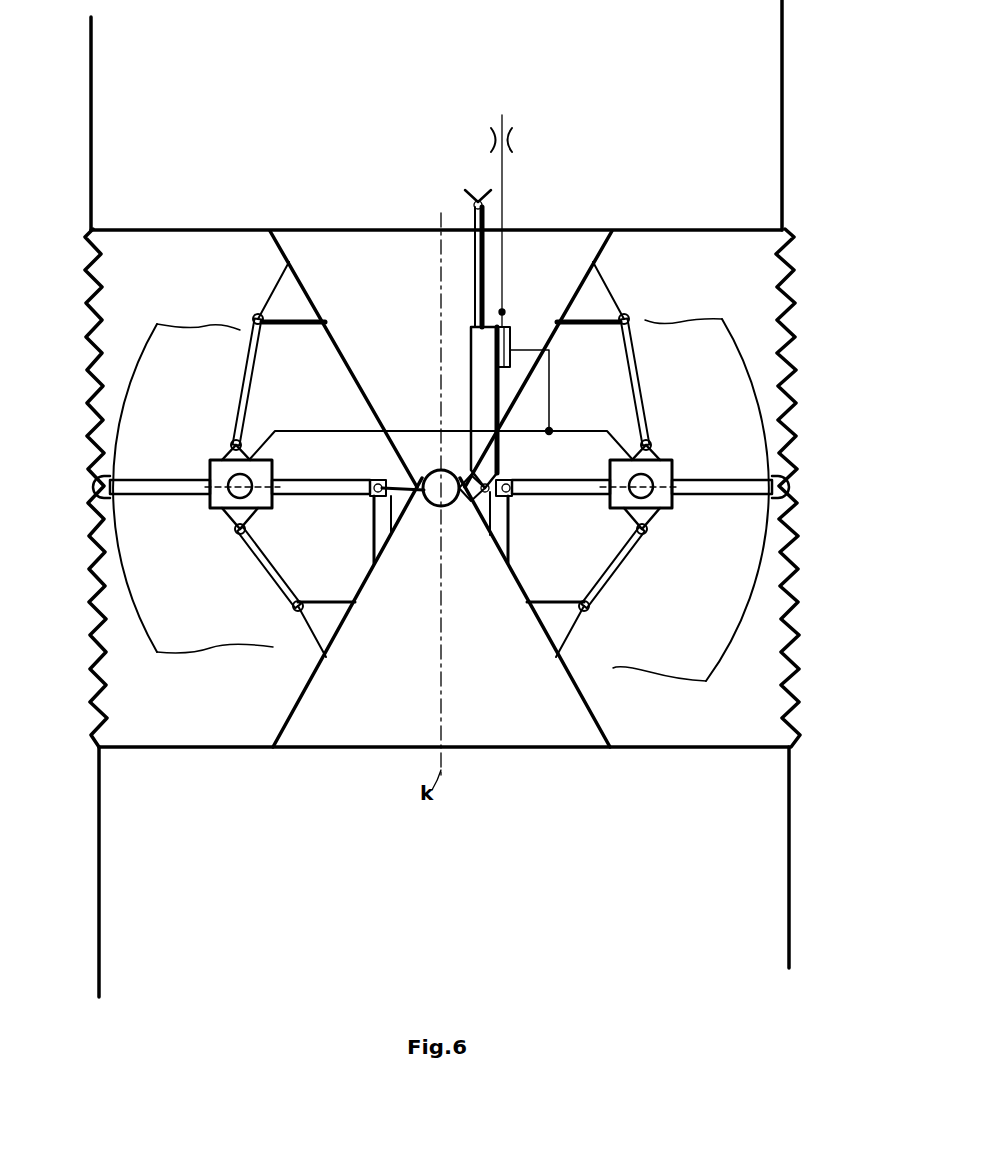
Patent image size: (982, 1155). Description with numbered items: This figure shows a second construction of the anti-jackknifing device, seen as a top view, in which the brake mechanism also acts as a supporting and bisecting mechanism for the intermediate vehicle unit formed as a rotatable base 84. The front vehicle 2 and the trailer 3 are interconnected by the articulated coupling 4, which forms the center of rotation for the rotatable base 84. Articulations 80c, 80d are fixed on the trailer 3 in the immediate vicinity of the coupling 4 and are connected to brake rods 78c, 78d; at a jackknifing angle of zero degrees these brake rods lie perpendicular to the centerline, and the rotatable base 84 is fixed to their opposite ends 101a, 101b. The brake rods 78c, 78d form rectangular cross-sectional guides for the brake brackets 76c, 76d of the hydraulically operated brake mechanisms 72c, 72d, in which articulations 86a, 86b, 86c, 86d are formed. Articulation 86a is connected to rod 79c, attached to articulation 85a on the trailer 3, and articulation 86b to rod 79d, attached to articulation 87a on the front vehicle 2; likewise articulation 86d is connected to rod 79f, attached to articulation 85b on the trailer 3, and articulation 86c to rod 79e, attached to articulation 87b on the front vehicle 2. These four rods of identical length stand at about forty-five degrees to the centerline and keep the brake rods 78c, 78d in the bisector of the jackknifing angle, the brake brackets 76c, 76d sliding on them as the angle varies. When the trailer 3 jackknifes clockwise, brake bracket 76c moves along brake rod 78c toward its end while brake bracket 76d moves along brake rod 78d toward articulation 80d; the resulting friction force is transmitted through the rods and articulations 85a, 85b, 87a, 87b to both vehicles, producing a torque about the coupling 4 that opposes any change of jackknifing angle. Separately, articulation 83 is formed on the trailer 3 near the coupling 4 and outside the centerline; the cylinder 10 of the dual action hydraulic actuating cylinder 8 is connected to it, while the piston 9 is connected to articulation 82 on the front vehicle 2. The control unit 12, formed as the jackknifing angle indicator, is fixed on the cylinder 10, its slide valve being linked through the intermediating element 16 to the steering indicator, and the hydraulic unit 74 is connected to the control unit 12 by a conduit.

The front vehicle 2 is at (765, 37).
The trailer 3 is at (768, 891).
The articulated coupling 4 is at (432, 468).
The dual action hydraulic actuating cylinder 8 is at (470, 363).
The piston 9 is at (472, 262).
The cylinder 10 is at (485, 405).
The control unit 12 is at (502, 328).
The intermediating element 16 is at (505, 128).
The brake mechanism 72c is at (215, 476).
The brake mechanism 72d is at (665, 478).
The hydraulic unit 74 is at (549, 400).
The brake bracket 76c is at (236, 520).
The brake bracket 76d is at (665, 512).
The brake rod 78c is at (160, 490).
The brake rod 78d is at (703, 482).
The rod 79c is at (266, 575).
The rod 79d is at (250, 390).
The rod 79e is at (632, 360).
The rod 79f is at (612, 572).
The articulation 80c is at (380, 500).
The articulation 80d is at (510, 500).
The articulation 82 is at (472, 205).
The articulation 83 is at (446, 506).
The rotatable base 84 is at (722, 340).
The articulation 85a is at (292, 610).
The articulation 85b is at (592, 612).
The articulation 86a is at (246, 531).
The articulation 86b is at (234, 440).
The articulation 86c is at (648, 440).
The articulation 86d is at (648, 533).
The articulation 87a is at (256, 313).
The articulation 87b is at (626, 313).
The end 101a is at (104, 498).
The end 101b is at (778, 498).